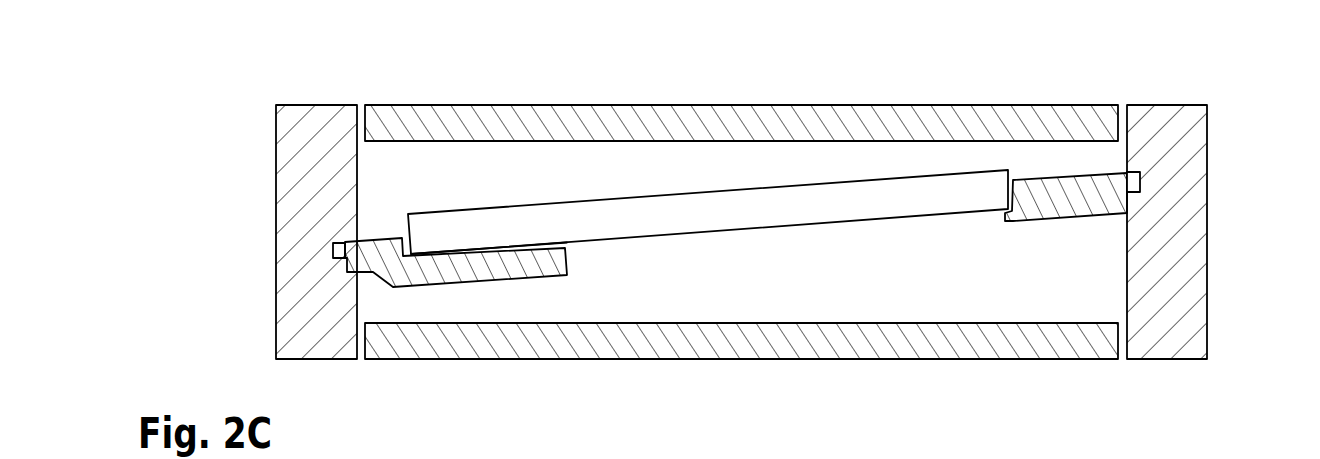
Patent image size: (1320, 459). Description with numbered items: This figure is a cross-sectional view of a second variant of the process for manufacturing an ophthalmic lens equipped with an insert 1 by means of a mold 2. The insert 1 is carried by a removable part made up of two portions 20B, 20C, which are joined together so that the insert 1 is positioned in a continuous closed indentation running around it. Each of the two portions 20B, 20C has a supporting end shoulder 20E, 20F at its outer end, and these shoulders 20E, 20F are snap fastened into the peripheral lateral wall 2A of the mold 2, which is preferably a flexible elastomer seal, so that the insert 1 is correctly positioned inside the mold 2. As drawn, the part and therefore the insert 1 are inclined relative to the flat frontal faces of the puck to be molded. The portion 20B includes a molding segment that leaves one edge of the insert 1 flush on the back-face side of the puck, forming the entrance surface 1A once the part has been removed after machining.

The insert 1 is at (690, 205).
The entrance surface 1A is at (510, 253).
The mold 2 is at (1175, 98).
The peripheral lateral wall 2A is at (300, 315).
The portion 20B is at (458, 272).
The portion 20C is at (1068, 203).
The supporting end shoulder 20E is at (338, 250).
The supporting end shoulder 20F is at (1133, 182).